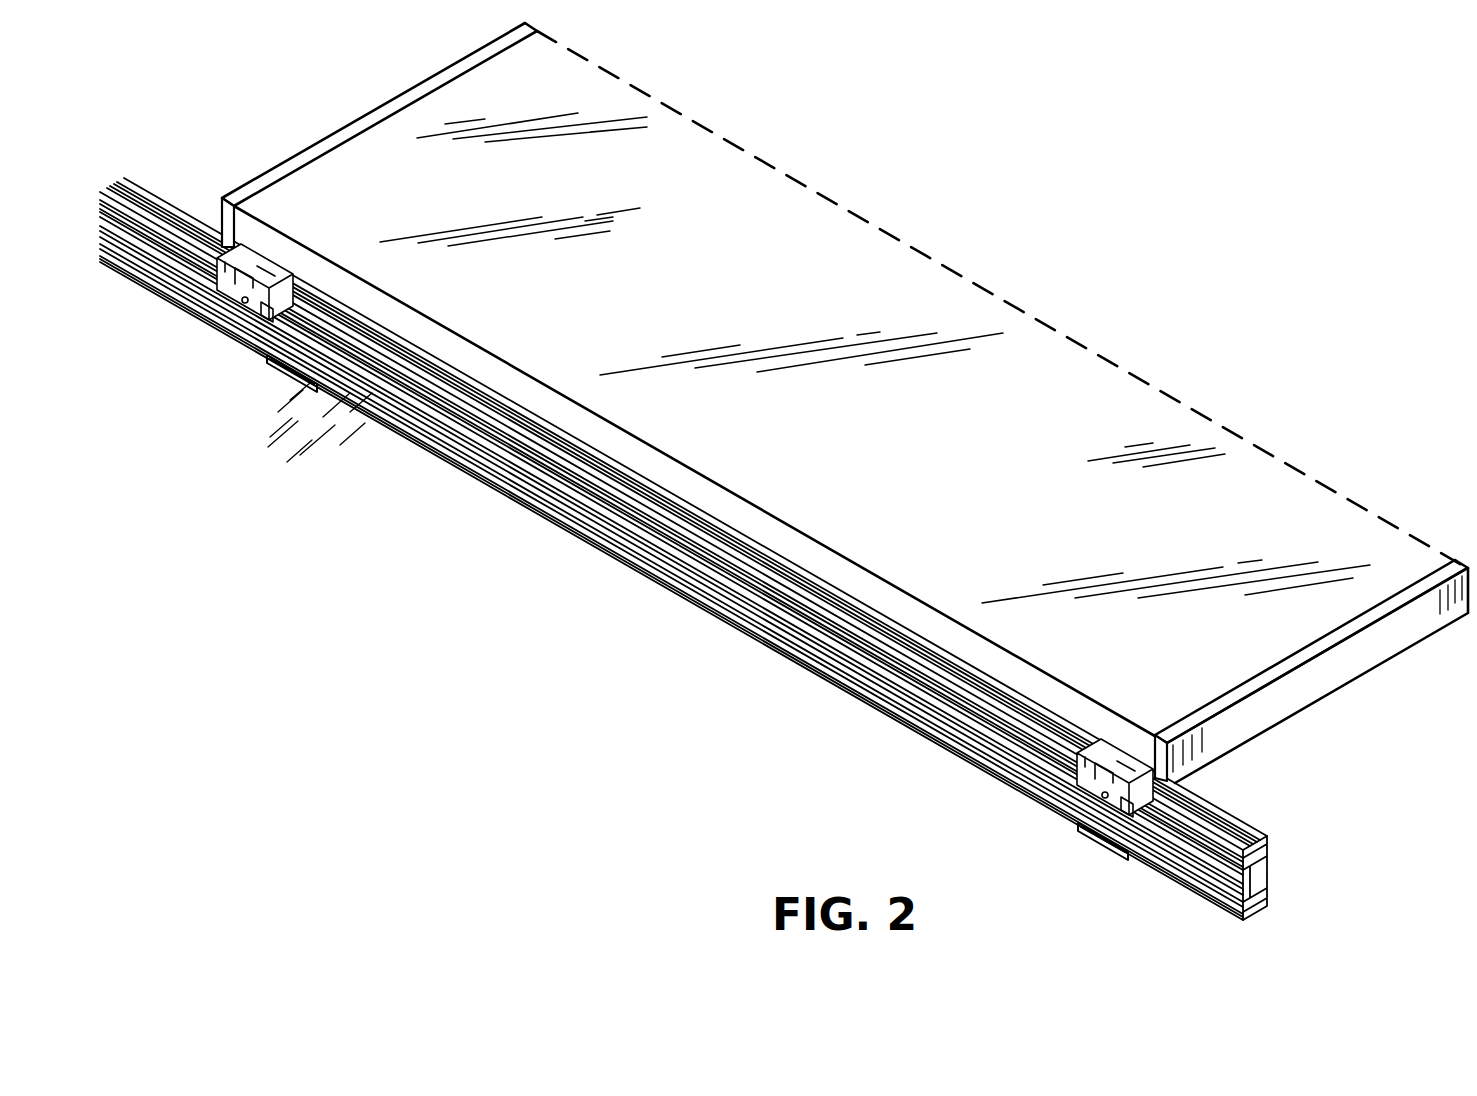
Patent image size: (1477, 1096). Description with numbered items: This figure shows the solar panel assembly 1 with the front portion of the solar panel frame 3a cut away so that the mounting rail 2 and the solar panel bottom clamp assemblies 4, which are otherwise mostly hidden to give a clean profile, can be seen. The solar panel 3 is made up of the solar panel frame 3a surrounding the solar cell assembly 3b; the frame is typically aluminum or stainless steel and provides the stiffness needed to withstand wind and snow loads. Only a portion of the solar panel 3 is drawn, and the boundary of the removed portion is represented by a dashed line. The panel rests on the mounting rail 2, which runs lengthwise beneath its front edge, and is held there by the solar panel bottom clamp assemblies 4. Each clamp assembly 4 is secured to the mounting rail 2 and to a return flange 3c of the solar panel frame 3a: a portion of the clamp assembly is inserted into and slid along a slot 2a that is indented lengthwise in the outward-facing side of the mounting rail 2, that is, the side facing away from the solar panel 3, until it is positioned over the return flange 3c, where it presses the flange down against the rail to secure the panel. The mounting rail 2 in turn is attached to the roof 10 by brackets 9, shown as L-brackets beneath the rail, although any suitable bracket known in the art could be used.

The solar panel assembly 1 is at (845, 403).
The mounting rail 2 is at (726, 549).
The slot 2a is at (1272, 866).
The solar panel 3 is at (845, 403).
The solar panel frame 3a is at (1380, 640).
The solar cell assembly 3b is at (1163, 388).
The return flange 3c is at (263, 230).
The solar panel bottom clamp assembly 4 is at (244, 288).
The bracket 9 is at (272, 362).
The roof 10 is at (344, 441).